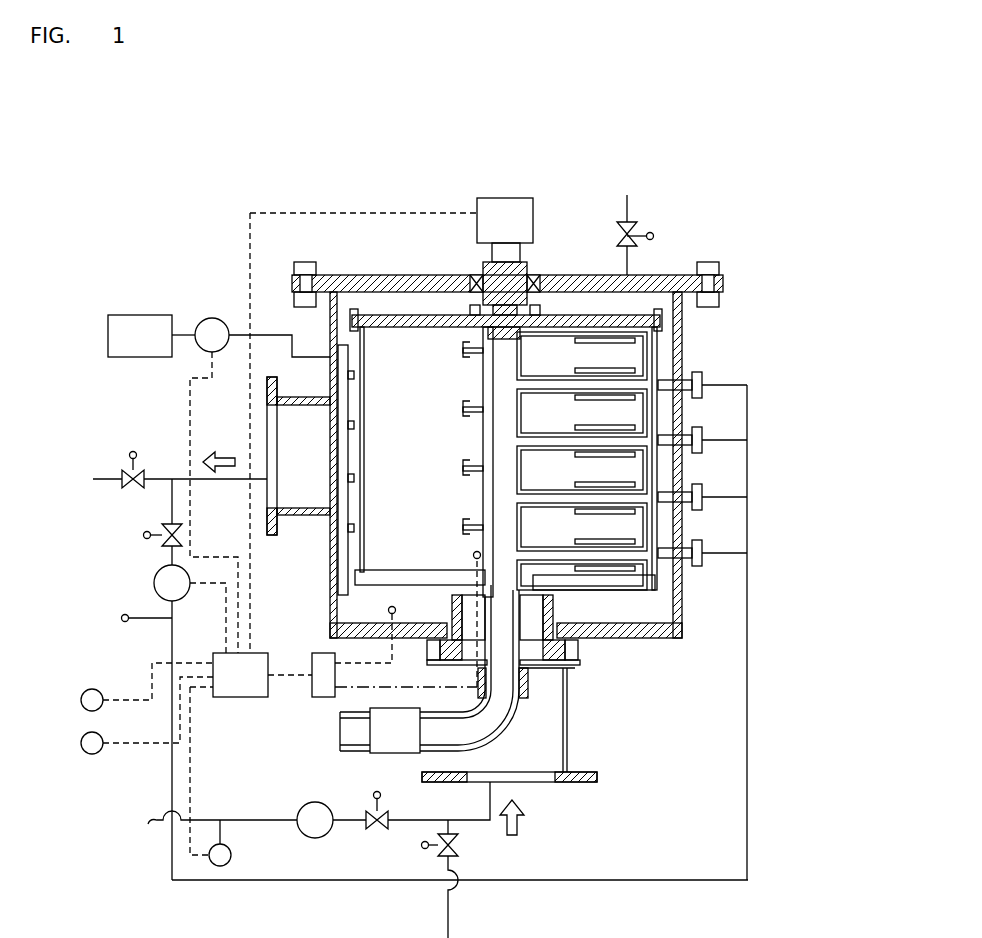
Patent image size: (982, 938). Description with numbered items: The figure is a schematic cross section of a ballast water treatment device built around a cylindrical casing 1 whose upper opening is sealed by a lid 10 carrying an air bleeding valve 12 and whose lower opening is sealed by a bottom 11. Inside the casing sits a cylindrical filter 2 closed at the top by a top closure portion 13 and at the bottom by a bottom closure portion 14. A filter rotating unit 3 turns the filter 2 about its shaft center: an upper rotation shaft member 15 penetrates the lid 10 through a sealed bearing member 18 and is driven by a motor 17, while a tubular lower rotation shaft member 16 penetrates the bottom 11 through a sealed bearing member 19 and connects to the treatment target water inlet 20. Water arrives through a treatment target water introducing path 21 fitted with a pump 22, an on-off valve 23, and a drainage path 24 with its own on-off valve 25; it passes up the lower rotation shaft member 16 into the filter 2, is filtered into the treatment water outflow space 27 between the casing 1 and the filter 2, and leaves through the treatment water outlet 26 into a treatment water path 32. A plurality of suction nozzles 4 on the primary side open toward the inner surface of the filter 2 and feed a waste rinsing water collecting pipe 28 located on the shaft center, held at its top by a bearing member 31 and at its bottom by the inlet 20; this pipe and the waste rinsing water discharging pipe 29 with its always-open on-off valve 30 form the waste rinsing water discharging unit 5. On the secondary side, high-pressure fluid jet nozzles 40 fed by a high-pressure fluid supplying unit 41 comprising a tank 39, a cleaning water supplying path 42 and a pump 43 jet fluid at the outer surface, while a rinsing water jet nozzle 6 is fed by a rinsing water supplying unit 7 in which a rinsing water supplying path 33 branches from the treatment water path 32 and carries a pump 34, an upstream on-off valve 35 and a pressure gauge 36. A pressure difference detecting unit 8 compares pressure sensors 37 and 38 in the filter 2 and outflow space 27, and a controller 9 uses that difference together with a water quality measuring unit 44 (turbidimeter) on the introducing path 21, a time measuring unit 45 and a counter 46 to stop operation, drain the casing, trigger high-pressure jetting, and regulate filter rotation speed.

The casing 1 is at (686, 332).
The filter 2 is at (657, 356).
The filter rotating unit 3 is at (545, 258).
The suction nozzle 4 is at (470, 358).
The waste rinsing water discharging unit 5 is at (530, 355).
The rinsing water jet nozzle 6 is at (695, 398).
The rinsing water supplying unit 7 is at (150, 566).
The pressure difference detecting unit 8 is at (322, 692).
The controller 9 is at (243, 697).
The lid 10 is at (362, 275).
The bottom 11 is at (672, 636).
The air bleeding valve 12 is at (656, 235).
The top closure portion 13 is at (583, 314).
The bottom closure portion 14 is at (620, 602).
The upper rotation shaft member 15 is at (490, 268).
The lower rotation shaft member 16 is at (560, 612).
The motor 17 is at (512, 198).
The sealed bearing member 18 is at (478, 281).
The sealed bearing member 19 is at (562, 650).
The treatment target water inlet 20 is at (560, 745).
The treatment target water introducing path 21 is at (226, 818).
The pump 22 is at (302, 834).
The on-off valve 23 is at (373, 794).
The drainage path 24 is at (452, 915).
The on-off valve 25 is at (417, 847).
The treatment water outlet 26 is at (287, 416).
The treatment water outflow space 27 is at (672, 604).
The waste rinsing water collecting pipe 28 is at (522, 455).
The waste rinsing water discharging pipe 29 is at (500, 738).
The on-off valve 30 is at (400, 753).
The bearing member 31 is at (478, 316).
The treatment water path 32 is at (222, 483).
The rinsing water supplying path 33 is at (172, 608).
The pump 34 is at (154, 583).
The on-off valve 35 is at (143, 534).
The pressure gauge 36 is at (125, 623).
The pressure sensor 37 is at (473, 555).
The pressure sensor 38 is at (396, 610).
The tank 39 is at (124, 315).
The high-pressure fluid jet nozzle 40 is at (354, 375).
The high-pressure fluid supplying unit 41 is at (198, 300).
The cleaning water supplying path 42 is at (270, 334).
The pump 43 is at (216, 318).
The water quality measuring unit 44 is at (220, 866).
The time measuring unit 45 is at (92, 689).
The counter 46 is at (92, 755).